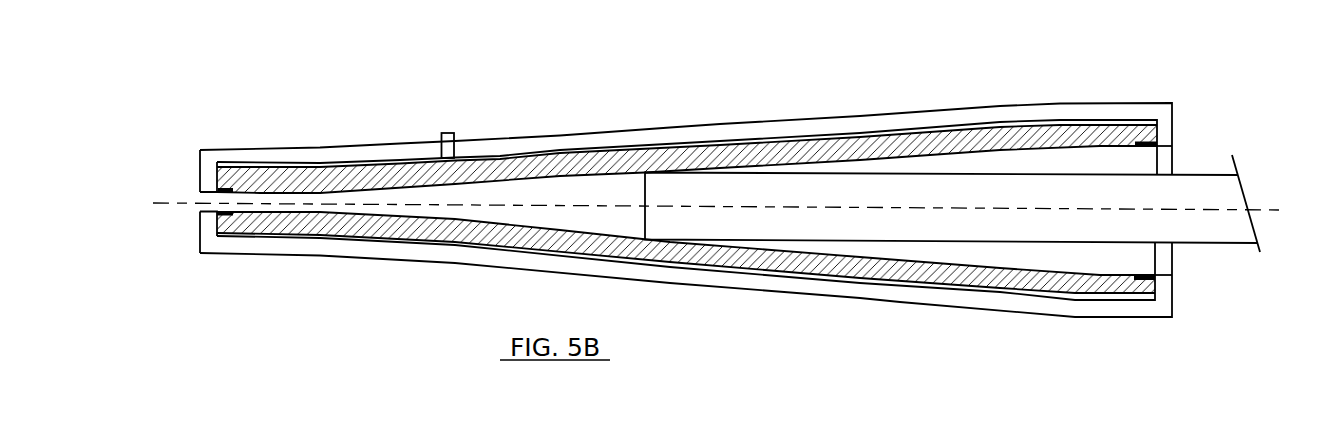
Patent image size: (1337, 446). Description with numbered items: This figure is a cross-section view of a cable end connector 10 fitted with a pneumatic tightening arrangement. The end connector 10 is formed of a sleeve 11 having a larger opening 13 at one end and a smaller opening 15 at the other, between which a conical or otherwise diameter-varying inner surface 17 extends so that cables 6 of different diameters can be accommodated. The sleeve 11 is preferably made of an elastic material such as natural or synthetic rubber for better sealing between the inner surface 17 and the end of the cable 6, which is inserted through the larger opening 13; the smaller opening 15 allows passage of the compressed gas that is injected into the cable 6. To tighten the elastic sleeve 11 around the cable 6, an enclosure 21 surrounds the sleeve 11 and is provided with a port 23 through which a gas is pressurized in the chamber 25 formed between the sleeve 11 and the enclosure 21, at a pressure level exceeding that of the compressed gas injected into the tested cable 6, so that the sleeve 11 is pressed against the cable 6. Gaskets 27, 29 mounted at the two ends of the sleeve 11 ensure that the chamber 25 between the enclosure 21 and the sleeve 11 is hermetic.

The cable 6 is at (1210, 232).
The end connector 10 is at (911, 90).
The sleeve 11 is at (807, 152).
The larger opening 13 is at (1188, 158).
The smaller opening 15 is at (185, 210).
The inner surface 17 is at (935, 262).
The enclosure 21 is at (790, 294).
The port 23 is at (444, 124).
The chamber 25 is at (634, 148).
The gasket 27 is at (1150, 276).
The gasket 29 is at (218, 213).